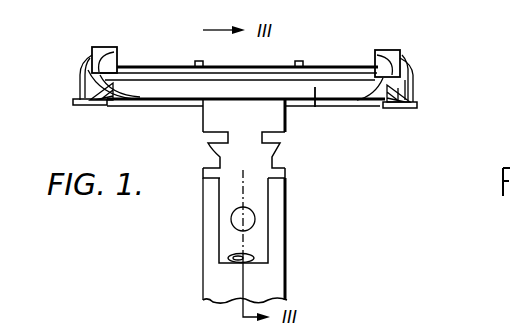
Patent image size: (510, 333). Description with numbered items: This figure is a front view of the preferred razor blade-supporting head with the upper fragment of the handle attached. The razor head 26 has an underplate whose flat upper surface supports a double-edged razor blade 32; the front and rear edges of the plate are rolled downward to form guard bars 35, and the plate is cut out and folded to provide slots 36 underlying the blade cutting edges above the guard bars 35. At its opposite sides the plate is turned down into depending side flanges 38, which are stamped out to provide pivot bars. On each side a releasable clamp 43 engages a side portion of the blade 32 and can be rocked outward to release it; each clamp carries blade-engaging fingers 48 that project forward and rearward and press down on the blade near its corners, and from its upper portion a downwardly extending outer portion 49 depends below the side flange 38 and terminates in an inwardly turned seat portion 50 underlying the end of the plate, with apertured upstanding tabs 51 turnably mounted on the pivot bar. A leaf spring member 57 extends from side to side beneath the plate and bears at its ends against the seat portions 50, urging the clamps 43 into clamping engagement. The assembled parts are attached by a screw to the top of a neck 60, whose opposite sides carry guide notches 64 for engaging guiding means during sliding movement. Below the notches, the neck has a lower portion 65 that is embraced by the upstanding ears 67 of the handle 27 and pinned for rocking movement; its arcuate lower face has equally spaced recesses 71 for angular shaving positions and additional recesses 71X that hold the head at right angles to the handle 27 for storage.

The razor head 26 is at (309, 38).
The handle 27 is at (300, 281).
The razor blade 32 is at (137, 72).
The guard bars 35 is at (315, 98).
The slots 36 is at (183, 77).
The side flanges 38 is at (413, 90).
The releasable clamps 43 is at (407, 38).
The blade-engaging fingers 48 is at (120, 67).
The outer portion 49 is at (83, 65).
The seat portion 50 is at (97, 104).
The upstanding tabs 51 is at (82, 97).
The leaf spring member 57 is at (107, 112).
The neck 60 is at (290, 117).
The guide notches 64 is at (203, 137).
The lower portion 65 is at (240, 187).
The upstanding ears 67 is at (212, 223).
The recesses 71 is at (229, 258).
The additional recesses 71X is at (253, 223).